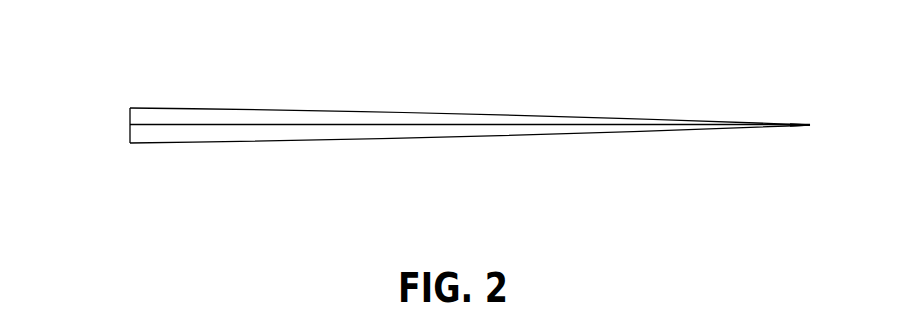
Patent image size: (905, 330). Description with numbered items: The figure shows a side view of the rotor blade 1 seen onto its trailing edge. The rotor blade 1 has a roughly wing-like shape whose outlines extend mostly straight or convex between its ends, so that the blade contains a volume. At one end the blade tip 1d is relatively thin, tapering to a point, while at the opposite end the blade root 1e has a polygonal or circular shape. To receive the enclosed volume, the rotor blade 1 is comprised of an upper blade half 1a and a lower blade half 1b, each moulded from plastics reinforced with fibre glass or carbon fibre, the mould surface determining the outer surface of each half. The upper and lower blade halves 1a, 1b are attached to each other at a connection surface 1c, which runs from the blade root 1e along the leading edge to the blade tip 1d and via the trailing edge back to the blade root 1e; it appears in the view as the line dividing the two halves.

The rotor blade 1 is at (178, 69).
The upper blade half 1a is at (292, 108).
The lower blade half 1b is at (272, 142).
The connection surface 1c is at (387, 125).
The blade tip 1d is at (810, 125).
The blade root 1e is at (130, 132).